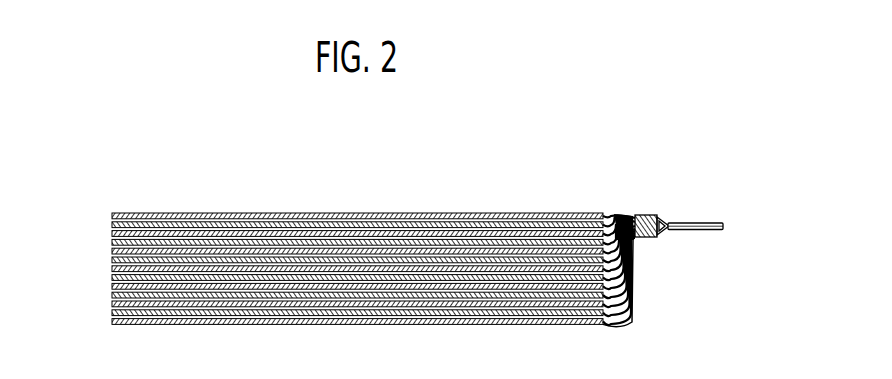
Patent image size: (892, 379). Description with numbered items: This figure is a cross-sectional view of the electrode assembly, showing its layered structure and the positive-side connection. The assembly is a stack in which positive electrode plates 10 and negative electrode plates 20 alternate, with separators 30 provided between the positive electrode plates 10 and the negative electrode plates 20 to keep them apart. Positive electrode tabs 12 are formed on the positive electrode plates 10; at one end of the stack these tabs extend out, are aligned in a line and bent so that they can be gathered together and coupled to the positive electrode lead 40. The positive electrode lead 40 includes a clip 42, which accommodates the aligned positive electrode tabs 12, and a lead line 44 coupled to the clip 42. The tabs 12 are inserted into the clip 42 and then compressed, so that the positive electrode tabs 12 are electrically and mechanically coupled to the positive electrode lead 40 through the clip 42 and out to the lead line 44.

The positive electrode plates 10 is at (200, 213).
The negative electrode plates 20 is at (303, 213).
The separators 30 is at (257, 213).
The positive electrode tabs 12 is at (633, 217).
The positive electrode lead 40 is at (679, 170).
The clip 42 is at (653, 217).
The lead line 44 is at (680, 220).